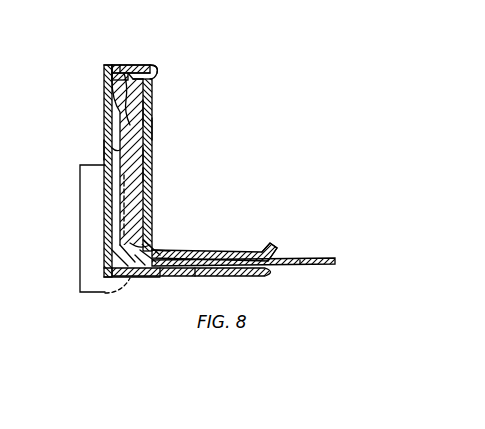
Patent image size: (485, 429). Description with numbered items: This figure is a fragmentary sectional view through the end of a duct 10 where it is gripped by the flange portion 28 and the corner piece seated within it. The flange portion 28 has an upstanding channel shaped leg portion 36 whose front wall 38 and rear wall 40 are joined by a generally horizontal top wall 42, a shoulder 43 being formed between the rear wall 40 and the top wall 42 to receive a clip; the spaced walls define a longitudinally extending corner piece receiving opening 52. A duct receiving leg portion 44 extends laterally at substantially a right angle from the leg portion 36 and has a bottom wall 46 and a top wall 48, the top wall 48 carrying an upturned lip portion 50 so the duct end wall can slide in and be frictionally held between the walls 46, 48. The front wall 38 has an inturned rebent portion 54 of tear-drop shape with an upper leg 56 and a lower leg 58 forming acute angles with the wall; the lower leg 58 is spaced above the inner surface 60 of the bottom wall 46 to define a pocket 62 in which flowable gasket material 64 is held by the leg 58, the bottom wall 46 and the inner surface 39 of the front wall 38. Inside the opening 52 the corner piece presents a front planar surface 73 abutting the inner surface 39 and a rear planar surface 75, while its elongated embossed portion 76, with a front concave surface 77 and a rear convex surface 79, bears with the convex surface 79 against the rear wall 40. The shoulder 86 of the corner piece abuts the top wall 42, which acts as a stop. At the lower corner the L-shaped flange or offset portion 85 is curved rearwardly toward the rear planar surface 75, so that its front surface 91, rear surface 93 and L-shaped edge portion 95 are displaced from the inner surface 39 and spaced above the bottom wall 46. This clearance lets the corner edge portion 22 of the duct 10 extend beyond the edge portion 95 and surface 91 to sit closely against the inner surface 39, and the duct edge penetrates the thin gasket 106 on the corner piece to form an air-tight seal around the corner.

The duct 10 is at (318, 275).
The corner edge portion 22 is at (140, 258).
The flange portion 28 is at (152, 97).
The upstanding channel shaped leg portion 36 is at (98, 143).
The front wall 38 is at (104, 122).
The inner surface 39 is at (143, 175).
The rear wall 40 is at (152, 128).
The top wall 42 is at (139, 65).
The shoulder 43 is at (160, 66).
The duct receiving leg portion 44 is at (225, 239).
The bottom wall 46 is at (236, 276).
The top wall 48 is at (250, 251).
The upturned lip portion 50 is at (277, 246).
The corner piece receiving opening 52 is at (118, 110).
The inturned rebent portion 54 is at (96, 239).
The upper leg 56 is at (155, 240).
The lower leg 58 is at (130, 252).
The inner surface 60 is at (200, 276).
The pocket 62 is at (168, 276).
The gasket material 64 is at (158, 256).
The front planar surface 73 is at (110, 76).
The rear planar surface 75 is at (143, 76).
The embossed portion 76 is at (152, 154).
The front concave surface 77 is at (104, 150).
The rear convex surface 79 is at (152, 112).
The L-shaped flange or offset portion 85 is at (124, 272).
The shoulder 86 is at (126, 65).
The front surface 91 is at (135, 252).
The rear surface 93 is at (150, 248).
The L-shaped edge portion 95 is at (143, 276).
The gasket 106 is at (80, 175).